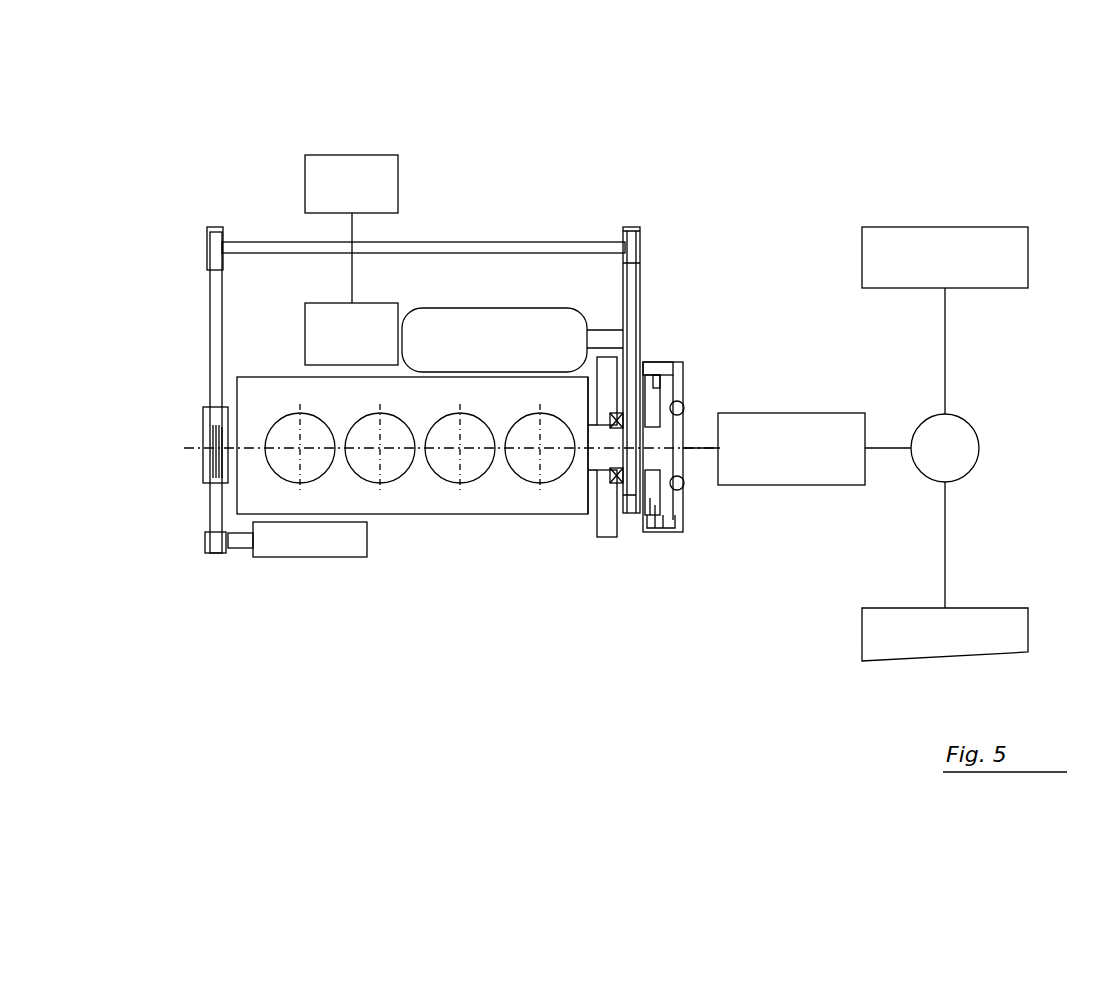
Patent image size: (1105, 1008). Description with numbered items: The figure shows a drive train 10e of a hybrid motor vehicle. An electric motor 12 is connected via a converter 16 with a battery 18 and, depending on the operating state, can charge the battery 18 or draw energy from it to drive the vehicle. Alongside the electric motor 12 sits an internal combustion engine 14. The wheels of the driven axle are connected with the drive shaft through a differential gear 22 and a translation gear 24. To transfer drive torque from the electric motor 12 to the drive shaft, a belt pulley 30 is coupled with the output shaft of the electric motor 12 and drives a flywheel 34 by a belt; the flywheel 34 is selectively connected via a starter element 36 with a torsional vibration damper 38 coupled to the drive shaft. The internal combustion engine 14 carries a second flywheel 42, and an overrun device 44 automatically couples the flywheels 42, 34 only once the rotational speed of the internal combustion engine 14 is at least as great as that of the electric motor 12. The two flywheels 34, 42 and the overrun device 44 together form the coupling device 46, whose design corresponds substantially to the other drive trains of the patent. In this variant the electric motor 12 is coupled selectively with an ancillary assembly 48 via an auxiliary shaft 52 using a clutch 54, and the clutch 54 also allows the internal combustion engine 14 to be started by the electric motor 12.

The drive train 10e is at (847, 132).
The electric motor 12 is at (506, 351).
The internal combustion engine 14 is at (420, 514).
The converter 16 is at (366, 346).
The battery 18 is at (366, 196).
The differential gear 22 is at (959, 460).
The translation gear 24 is at (805, 460).
The belt pulley 30 is at (630, 319).
The flywheel 34 is at (650, 402).
The starter element 36 is at (660, 498).
The torsional vibration damper 38 is at (686, 406).
The flywheel 42 is at (609, 366).
The overrun device 44 is at (617, 478).
The coupling device 46 is at (624, 557).
The ancillary assembly 48 is at (323, 551).
The auxiliary shaft 52 is at (431, 242).
The clutch 54 is at (209, 485).